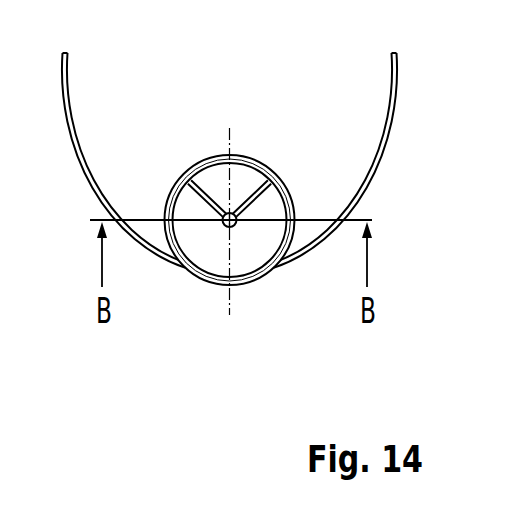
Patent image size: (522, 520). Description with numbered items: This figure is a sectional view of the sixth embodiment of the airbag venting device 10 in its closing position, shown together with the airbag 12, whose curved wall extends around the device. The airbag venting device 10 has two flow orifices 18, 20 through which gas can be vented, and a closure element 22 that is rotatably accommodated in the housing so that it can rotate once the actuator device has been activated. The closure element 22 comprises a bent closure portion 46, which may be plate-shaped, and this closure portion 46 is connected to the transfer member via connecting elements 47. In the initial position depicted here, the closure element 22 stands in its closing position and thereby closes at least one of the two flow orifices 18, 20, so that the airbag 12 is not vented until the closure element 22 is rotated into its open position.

The airbag venting device 10 is at (213, 326).
The airbag 12 is at (391, 66).
The flow orifice 18 is at (259, 284).
The flow orifice 20 is at (267, 165).
The closure element 22 is at (202, 204).
The closure portion 46 is at (240, 156).
The connecting elements 47 is at (262, 198).